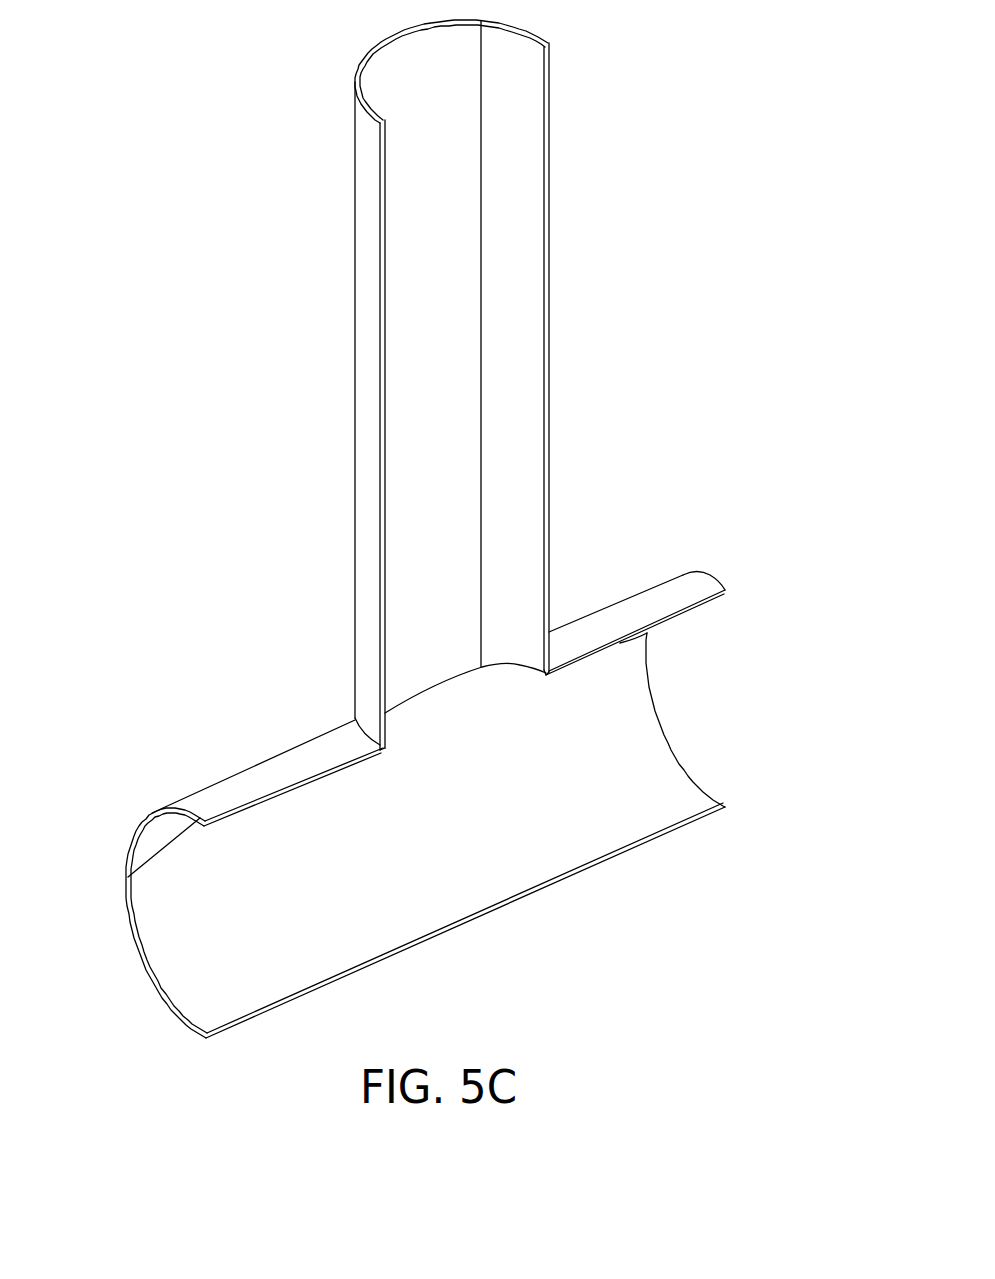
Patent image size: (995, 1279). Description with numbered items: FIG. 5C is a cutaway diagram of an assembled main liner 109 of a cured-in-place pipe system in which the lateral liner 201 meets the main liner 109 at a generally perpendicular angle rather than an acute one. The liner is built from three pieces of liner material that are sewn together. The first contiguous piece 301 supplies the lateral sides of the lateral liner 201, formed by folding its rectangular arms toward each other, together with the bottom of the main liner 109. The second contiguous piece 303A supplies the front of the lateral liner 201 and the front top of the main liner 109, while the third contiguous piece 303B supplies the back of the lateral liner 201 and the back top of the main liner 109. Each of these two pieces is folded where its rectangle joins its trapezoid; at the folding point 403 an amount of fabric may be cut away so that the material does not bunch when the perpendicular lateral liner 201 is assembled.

The lateral liner 201 is at (511, 385).
The third contiguous piece of liner material 303B is at (548, 273).
The second contiguous piece of liner material 303A is at (138, 820).
The first contiguous piece of liner material 301 is at (387, 835).
The main liner 109 is at (685, 575).
The folding point 403 is at (512, 660).